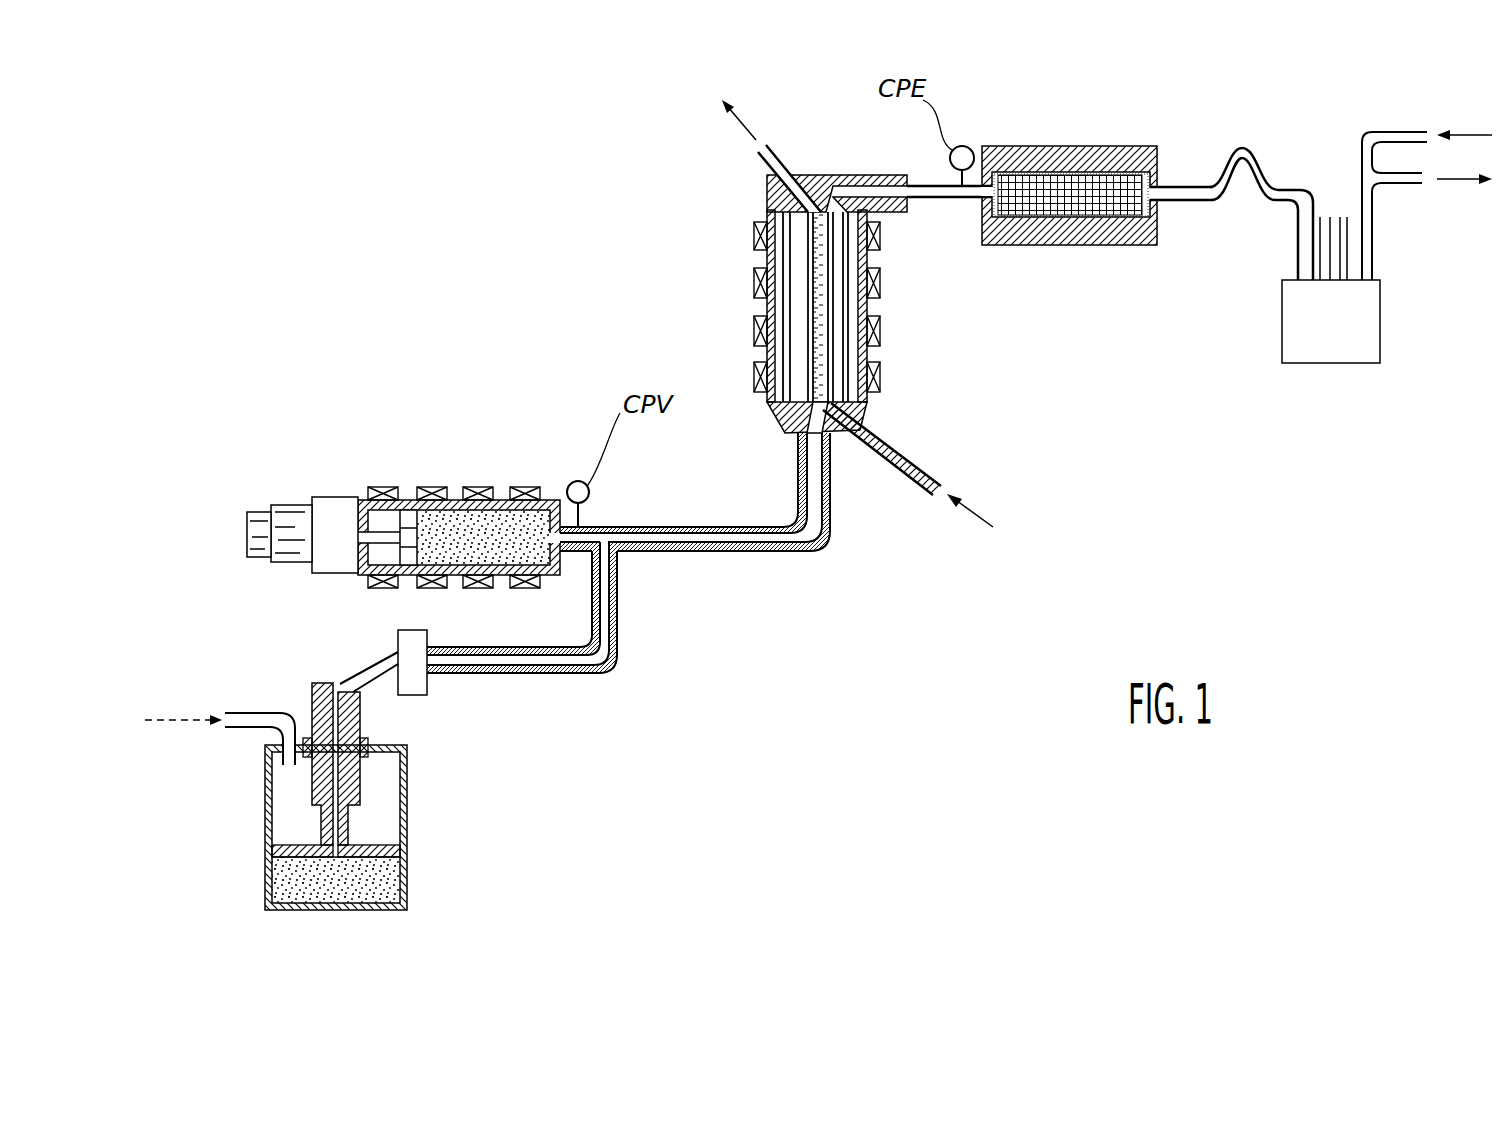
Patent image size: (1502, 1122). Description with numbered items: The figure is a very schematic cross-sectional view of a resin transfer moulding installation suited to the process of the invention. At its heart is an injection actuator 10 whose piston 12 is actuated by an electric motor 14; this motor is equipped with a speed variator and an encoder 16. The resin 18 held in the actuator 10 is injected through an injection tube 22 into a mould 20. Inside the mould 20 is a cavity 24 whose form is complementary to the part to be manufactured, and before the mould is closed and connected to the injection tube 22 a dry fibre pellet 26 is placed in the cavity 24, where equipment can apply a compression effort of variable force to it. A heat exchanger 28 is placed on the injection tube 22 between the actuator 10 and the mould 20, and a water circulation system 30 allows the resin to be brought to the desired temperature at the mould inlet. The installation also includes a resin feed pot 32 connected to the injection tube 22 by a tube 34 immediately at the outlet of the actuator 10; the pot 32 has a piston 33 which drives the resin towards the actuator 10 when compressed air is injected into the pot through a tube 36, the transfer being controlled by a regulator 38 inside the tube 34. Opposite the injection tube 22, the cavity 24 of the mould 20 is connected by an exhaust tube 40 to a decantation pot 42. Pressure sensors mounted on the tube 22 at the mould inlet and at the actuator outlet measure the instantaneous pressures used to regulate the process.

The injection actuator 10 is at (338, 492).
The piston 12 is at (407, 520).
The electric motor 14 is at (285, 520).
The encoder 16 is at (258, 540).
The resin 18 is at (490, 535).
The mould 20 is at (1036, 138).
The injection tube 22 is at (740, 551).
The cavity 24 is at (1052, 205).
The dry fibre pellet 26 is at (1128, 190).
The heat exchanger 28 is at (752, 257).
The water circulation system 30 is at (905, 460).
The resin feed pot 32 is at (418, 880).
The piston 33 is at (287, 847).
The tube 34 is at (581, 673).
The tube 36 is at (243, 712).
The regulator 38 is at (415, 690).
The exhaust tube 40 is at (1248, 150).
The decantation pot 42 is at (1308, 348).